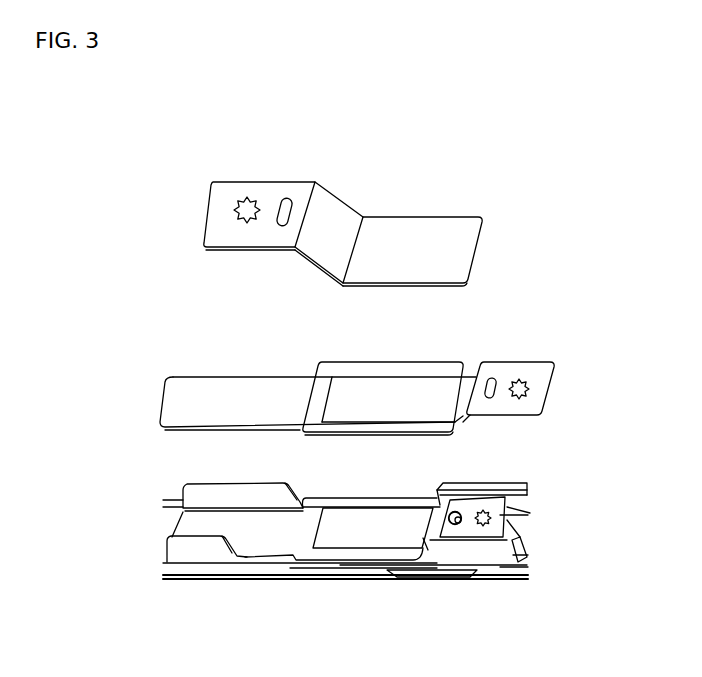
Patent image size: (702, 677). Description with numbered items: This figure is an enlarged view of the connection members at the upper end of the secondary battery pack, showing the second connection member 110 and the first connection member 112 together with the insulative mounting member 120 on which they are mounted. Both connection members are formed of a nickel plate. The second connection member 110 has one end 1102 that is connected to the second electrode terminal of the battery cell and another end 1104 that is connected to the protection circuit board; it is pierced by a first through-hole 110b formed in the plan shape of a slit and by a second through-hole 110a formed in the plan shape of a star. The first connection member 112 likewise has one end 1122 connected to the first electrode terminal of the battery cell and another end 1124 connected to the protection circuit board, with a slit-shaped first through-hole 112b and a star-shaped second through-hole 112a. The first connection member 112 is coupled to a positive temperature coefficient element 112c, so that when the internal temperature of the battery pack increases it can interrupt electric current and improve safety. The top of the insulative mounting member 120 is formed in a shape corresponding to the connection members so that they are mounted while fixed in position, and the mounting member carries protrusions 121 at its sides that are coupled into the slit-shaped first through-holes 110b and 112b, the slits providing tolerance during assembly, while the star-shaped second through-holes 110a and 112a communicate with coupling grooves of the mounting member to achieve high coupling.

The second connection member 110 is at (286, 197).
The second through-hole 110a is at (248, 197).
The first through-hole 110b is at (288, 198).
The one end of the second connection member 1102 is at (445, 233).
The other end of the second connection member 1104 is at (215, 229).
The first connection member 112 is at (354, 470).
The second through-hole 112a is at (524, 369).
The first through-hole 112b is at (493, 377).
The positive temperature coefficient (PTC) element 112c is at (380, 370).
The one end of the first connection member 1122 is at (185, 395).
The other end of the first connection member 1124 is at (530, 402).
The insulative mounting member 120 is at (172, 488).
The protrusion 121 is at (455, 525).